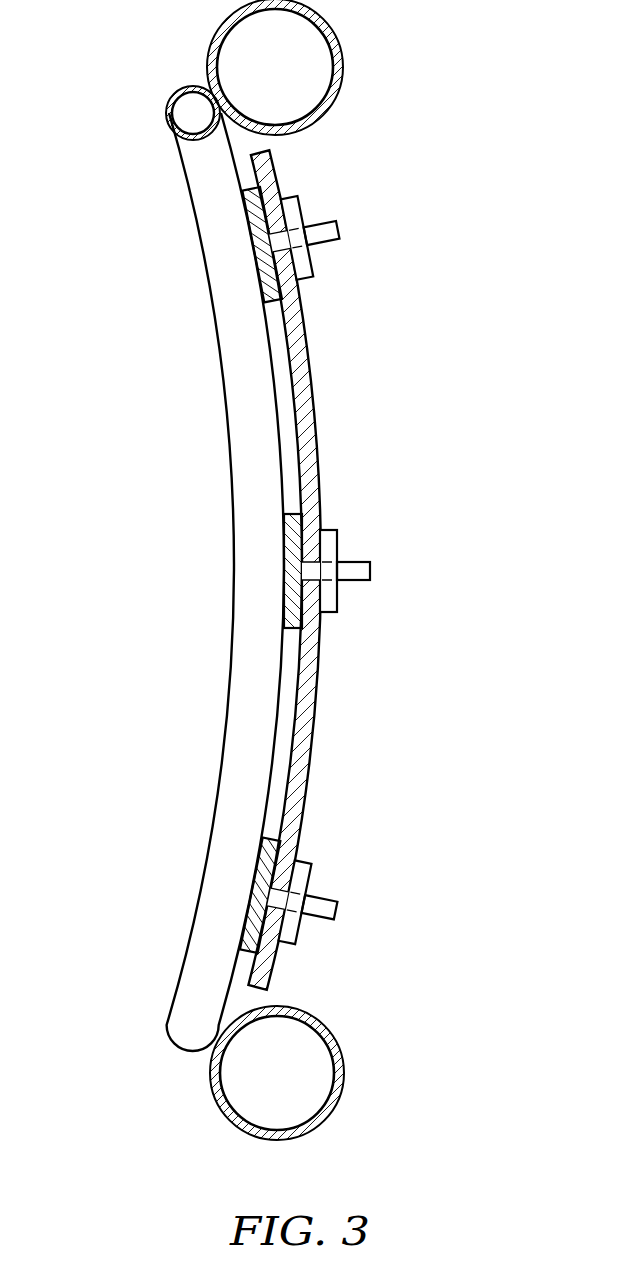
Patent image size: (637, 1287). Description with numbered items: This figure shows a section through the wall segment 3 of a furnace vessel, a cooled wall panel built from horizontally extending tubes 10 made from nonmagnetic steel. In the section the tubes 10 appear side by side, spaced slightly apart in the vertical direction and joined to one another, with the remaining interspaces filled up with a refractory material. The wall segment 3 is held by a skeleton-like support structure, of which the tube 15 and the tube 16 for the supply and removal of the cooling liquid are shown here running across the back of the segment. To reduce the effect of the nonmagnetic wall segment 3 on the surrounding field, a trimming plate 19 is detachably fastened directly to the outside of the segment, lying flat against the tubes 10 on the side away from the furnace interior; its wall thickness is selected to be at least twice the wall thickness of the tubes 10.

The wall segment 3 is at (174, 549).
The tubes 10 is at (228, 433).
The tube 15 is at (341, 1053).
The tube 16 is at (335, 50).
The trimming plate 19 is at (306, 424).